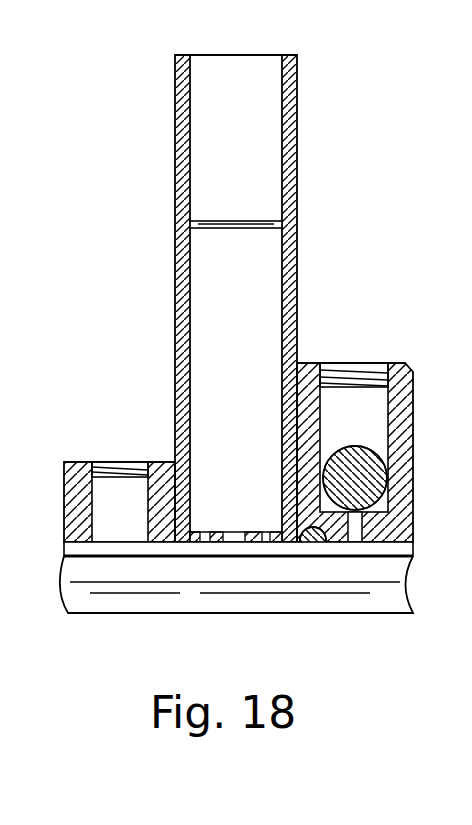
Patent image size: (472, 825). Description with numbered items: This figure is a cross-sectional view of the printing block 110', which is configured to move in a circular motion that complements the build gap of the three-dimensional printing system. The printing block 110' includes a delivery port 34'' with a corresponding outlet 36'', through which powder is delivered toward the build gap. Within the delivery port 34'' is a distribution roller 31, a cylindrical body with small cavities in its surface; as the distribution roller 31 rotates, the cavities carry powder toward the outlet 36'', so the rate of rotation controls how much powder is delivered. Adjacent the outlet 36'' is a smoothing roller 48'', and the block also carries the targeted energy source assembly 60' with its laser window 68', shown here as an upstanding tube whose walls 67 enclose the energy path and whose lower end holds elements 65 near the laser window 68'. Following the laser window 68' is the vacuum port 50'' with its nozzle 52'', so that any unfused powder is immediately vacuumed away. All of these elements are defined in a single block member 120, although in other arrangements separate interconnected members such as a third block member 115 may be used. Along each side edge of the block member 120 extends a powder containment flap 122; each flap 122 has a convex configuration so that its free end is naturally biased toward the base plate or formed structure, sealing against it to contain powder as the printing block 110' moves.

The printing block 110' is at (262, 366).
The targeted energy source assembly 60' is at (277, 359).
The tube wall 67 is at (297, 108).
The laser window 68' is at (236, 597).
The filter elements 65 is at (203, 532).
The block member 120 is at (412, 368).
The delivery port 34'' is at (354, 348).
The distribution roller 31 is at (351, 447).
The outlet 36'' is at (375, 590).
The smoothing roller 48'' is at (316, 597).
The nozzle 52'' is at (119, 540).
The vacuum port 50'' is at (120, 440).
The third block member 115 is at (413, 543).
The powder containment flap 122 is at (403, 606).